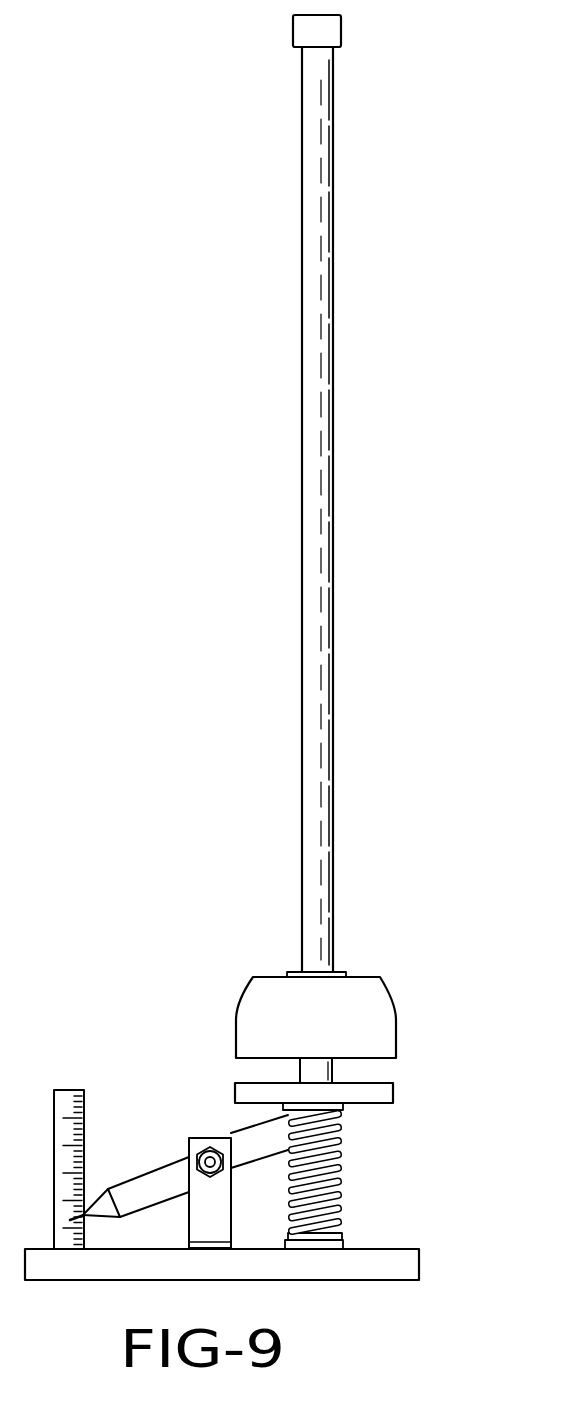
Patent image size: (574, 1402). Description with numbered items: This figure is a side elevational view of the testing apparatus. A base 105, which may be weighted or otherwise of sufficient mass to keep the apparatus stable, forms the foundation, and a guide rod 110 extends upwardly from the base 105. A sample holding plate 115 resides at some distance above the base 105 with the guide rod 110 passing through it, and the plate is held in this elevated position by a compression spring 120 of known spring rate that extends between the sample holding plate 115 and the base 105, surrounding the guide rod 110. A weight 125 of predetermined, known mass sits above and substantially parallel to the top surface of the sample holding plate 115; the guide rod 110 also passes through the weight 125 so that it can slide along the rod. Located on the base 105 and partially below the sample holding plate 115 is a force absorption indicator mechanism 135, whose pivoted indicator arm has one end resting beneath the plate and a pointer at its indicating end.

The base 105 is at (387, 1249).
The guide rod 110 is at (312, 254).
The sample holding plate 115 is at (383, 1097).
The compression spring 120 is at (337, 1202).
The weight 125 is at (378, 1005).
The force absorption indicator mechanism 135 is at (172, 1110).